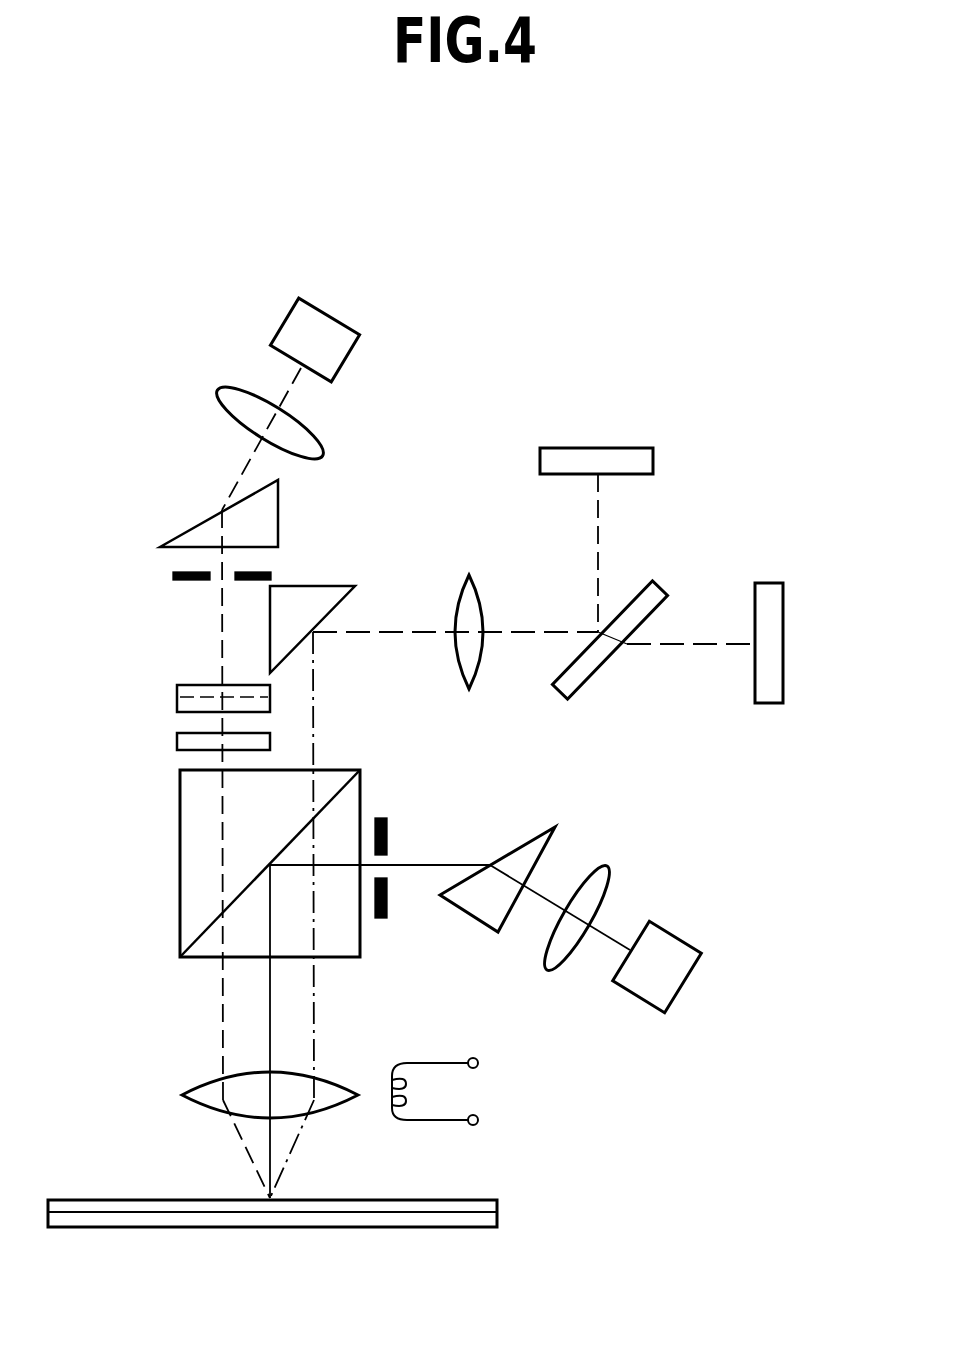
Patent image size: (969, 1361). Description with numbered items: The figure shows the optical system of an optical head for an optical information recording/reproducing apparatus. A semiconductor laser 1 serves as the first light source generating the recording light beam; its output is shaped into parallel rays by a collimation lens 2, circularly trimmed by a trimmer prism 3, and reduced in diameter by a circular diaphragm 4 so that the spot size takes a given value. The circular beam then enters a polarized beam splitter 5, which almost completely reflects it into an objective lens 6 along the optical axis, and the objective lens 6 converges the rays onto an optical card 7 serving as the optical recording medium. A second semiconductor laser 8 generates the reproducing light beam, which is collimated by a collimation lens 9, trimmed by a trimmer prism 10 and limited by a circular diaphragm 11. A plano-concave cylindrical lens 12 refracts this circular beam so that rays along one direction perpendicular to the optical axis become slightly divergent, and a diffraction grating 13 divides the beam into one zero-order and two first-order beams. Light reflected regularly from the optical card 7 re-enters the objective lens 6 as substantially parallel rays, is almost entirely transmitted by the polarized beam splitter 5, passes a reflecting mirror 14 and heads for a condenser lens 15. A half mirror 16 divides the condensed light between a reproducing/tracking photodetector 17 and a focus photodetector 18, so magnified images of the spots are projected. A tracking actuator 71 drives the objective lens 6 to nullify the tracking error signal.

The semiconductor laser 1 is at (700, 948).
The collimation lens 2 is at (592, 873).
The trimmer prism 3 is at (517, 842).
The circular diaphragm 4 is at (387, 825).
The polarized beam splitter 5 is at (180, 815).
The objective lens 6 is at (193, 1084).
The optical card 7 is at (97, 1200).
The tracking actuator 71 is at (443, 1120).
The semiconductor laser 8 is at (283, 322).
The collimation lens 9 is at (222, 392).
The trimmer prism 10 is at (188, 528).
The circular diaphragm 11 is at (173, 572).
The plano-concave cylindrical lens 12 is at (178, 687).
The diffraction grating 13 is at (180, 738).
The reflecting mirror 14 is at (323, 585).
The condenser lens 15 is at (467, 582).
The half mirror 16 is at (662, 608).
The reproducing/tracking photodetector 17 is at (783, 607).
The focus photodetector 18 is at (620, 447).